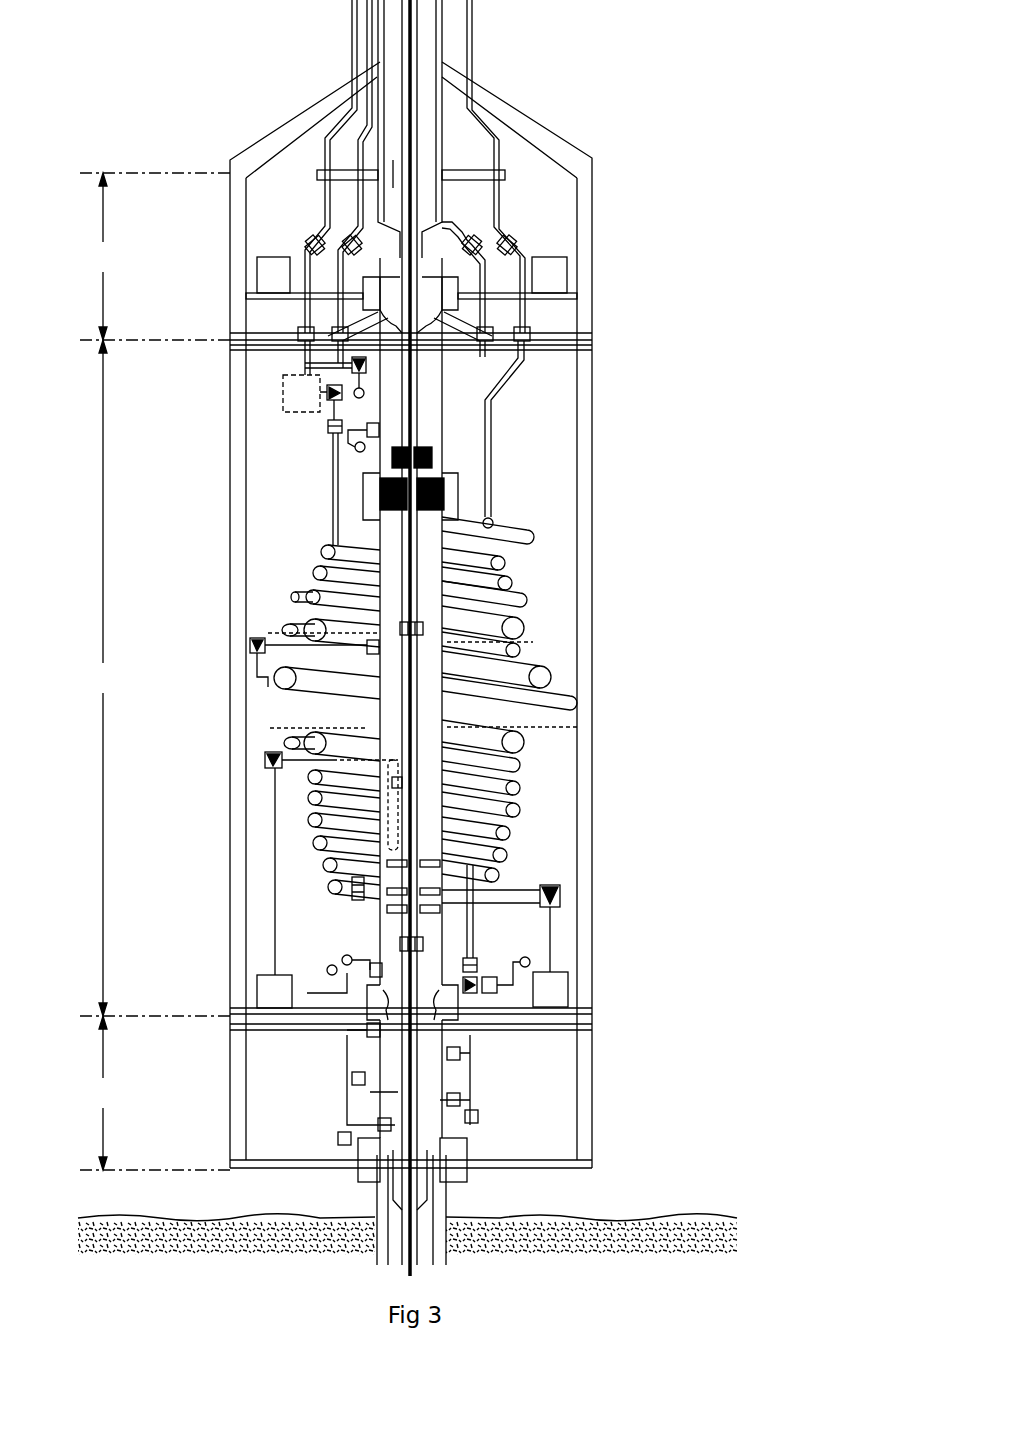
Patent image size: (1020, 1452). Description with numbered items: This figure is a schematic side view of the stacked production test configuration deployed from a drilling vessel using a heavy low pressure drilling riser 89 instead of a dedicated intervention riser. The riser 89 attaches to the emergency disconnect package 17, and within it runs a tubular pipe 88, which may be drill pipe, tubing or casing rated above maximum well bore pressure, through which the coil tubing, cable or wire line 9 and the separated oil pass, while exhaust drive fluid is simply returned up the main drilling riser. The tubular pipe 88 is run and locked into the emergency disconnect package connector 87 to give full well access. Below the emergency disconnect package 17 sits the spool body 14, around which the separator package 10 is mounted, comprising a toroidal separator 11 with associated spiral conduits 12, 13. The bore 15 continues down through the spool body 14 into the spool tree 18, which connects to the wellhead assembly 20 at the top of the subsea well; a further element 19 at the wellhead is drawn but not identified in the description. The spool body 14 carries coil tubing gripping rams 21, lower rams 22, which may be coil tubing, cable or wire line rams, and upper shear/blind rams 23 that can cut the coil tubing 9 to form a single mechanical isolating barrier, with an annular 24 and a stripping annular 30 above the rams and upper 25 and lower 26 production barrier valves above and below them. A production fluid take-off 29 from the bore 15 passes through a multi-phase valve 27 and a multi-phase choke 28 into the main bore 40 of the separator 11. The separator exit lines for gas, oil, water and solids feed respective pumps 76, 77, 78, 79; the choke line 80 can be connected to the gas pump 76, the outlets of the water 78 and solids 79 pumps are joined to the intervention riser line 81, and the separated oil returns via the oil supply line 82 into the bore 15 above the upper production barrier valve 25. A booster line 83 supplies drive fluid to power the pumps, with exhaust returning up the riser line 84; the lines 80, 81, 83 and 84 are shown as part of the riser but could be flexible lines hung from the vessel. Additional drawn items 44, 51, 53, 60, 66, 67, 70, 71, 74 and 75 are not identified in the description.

The coil tubing 9 is at (460, 753).
The separator package 10 is at (156, 678).
The toroidal separator 11 is at (550, 672).
The spiral conduit 12 is at (500, 583).
The spiral conduit 13 is at (510, 790).
The spool body 14 is at (445, 712).
The bore 15 is at (417, 530).
The emergency disconnect package 17 is at (156, 256).
The spool tree 18 is at (156, 1093).
The casing 19 is at (418, 1185).
The wellhead assembly 20 is at (375, 1194).
The coil tubing gripping rams 21 is at (383, 913).
The lower rams 22 is at (383, 893).
The upper shear/blind rams 23 is at (405, 866).
The annular 24 is at (380, 492).
The upper production barrier valve 25 is at (425, 627).
The lower production barrier valve 26 is at (425, 945).
The multi-phase valve 27 is at (363, 655).
The multi-phase choke 28 is at (247, 645).
The production fluid take-off 29 is at (390, 642).
The stripping annular 30 is at (430, 457).
The main bore 40 is at (277, 688).
The coil turn 44 is at (307, 622).
The valve 51 is at (327, 398).
The fitting 53 is at (327, 428).
The coil turn 60 is at (307, 730).
The fitting 66 is at (390, 783).
The valve 67 is at (263, 760).
The fitting 70 is at (477, 960).
The valve 71 is at (477, 993).
The fitting 74 is at (332, 898).
The valve 75 is at (560, 897).
The gas pump 76 is at (290, 397).
The pump 77 is at (257, 982).
The water pump 78 is at (497, 990).
The solids pump 79 is at (568, 982).
The choke line 80 is at (330, 128).
The intervention riser line 81 is at (500, 150).
The oil supply line 82 is at (348, 447).
The booster line 83 is at (368, 105).
The riser line 84 is at (493, 312).
The emergency disconnect package connector 87 is at (442, 248).
The tubular pipe 88 is at (420, 32).
The low pressure drilling riser 89 is at (378, 28).